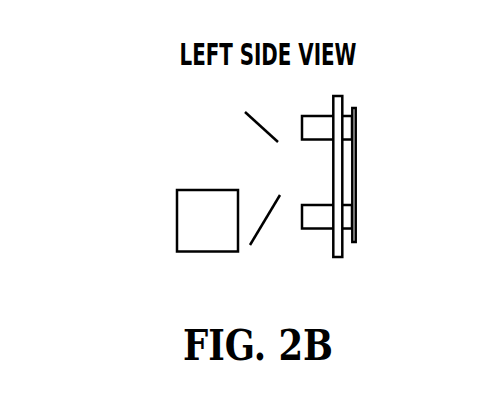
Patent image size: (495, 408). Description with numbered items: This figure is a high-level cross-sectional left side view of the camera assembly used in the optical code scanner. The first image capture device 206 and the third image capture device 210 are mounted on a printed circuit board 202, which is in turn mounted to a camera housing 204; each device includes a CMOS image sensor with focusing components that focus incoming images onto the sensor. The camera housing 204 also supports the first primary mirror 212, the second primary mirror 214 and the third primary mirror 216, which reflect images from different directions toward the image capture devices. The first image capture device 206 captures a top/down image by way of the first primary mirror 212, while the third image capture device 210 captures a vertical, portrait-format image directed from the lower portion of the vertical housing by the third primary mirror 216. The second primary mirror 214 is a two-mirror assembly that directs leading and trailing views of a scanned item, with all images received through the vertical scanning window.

The printed circuit board 202 is at (356, 167).
The camera housing 204 is at (356, 244).
The first image capture device 206 is at (310, 115).
The third image capture device 210 is at (312, 229).
The first primary mirror 212 is at (260, 130).
The second primary mirror 214 is at (198, 252).
The third primary mirror 216 is at (264, 222).